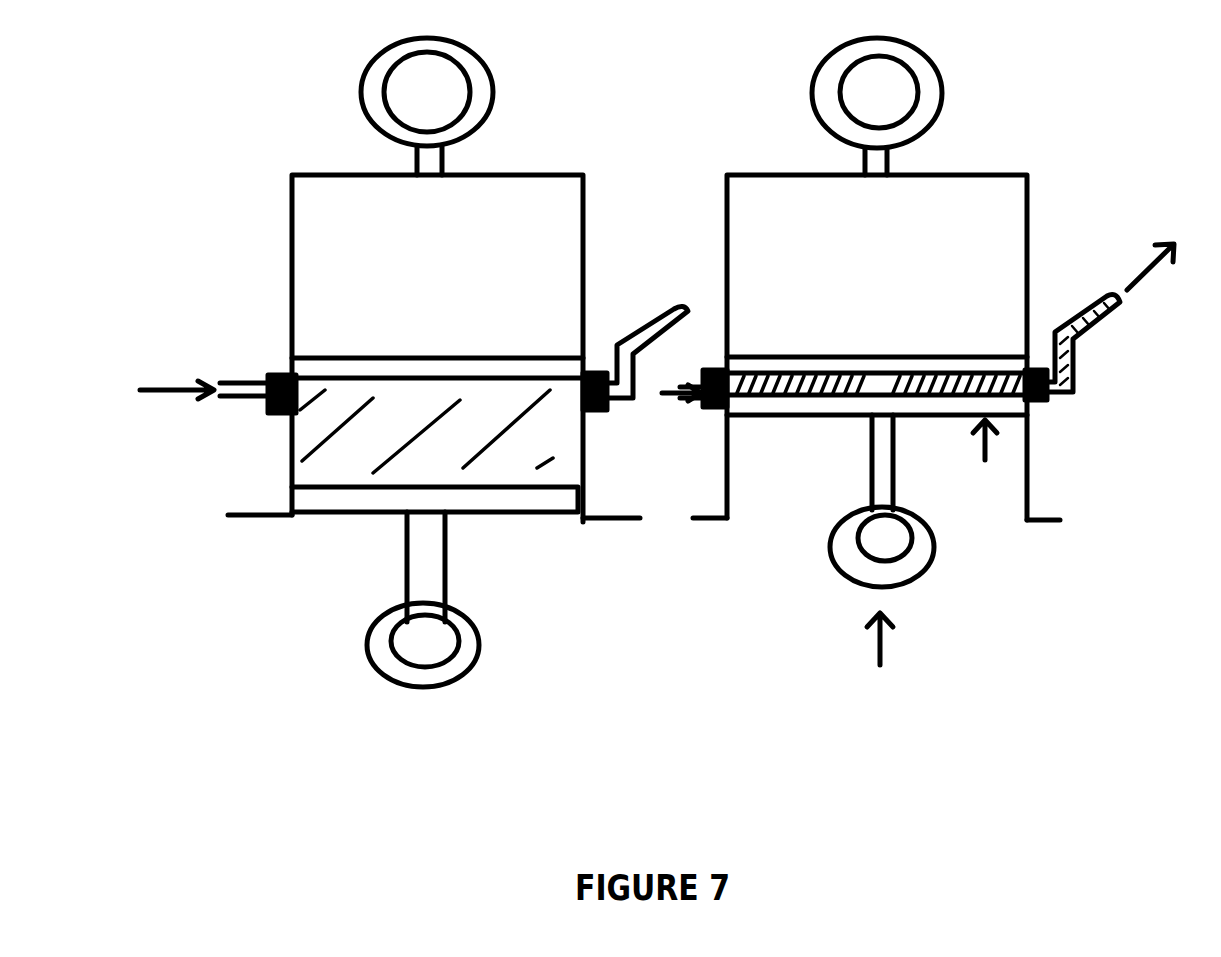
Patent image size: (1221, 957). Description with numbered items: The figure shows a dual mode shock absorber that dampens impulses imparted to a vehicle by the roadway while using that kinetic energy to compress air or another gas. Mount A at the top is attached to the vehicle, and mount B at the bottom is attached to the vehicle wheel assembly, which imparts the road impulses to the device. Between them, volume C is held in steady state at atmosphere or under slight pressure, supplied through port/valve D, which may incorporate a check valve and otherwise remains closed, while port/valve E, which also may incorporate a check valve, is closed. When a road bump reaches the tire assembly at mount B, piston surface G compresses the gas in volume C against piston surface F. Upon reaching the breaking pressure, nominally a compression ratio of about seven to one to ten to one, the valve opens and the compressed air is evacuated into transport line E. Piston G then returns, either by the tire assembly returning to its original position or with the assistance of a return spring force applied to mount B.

The mount A is at (671, 106).
The mount B is at (664, 551).
The volume C is at (660, 423).
The port/valve D is at (433, 402).
The port/valve E is at (878, 327).
The piston surface F is at (659, 350).
The piston surface G is at (659, 455).